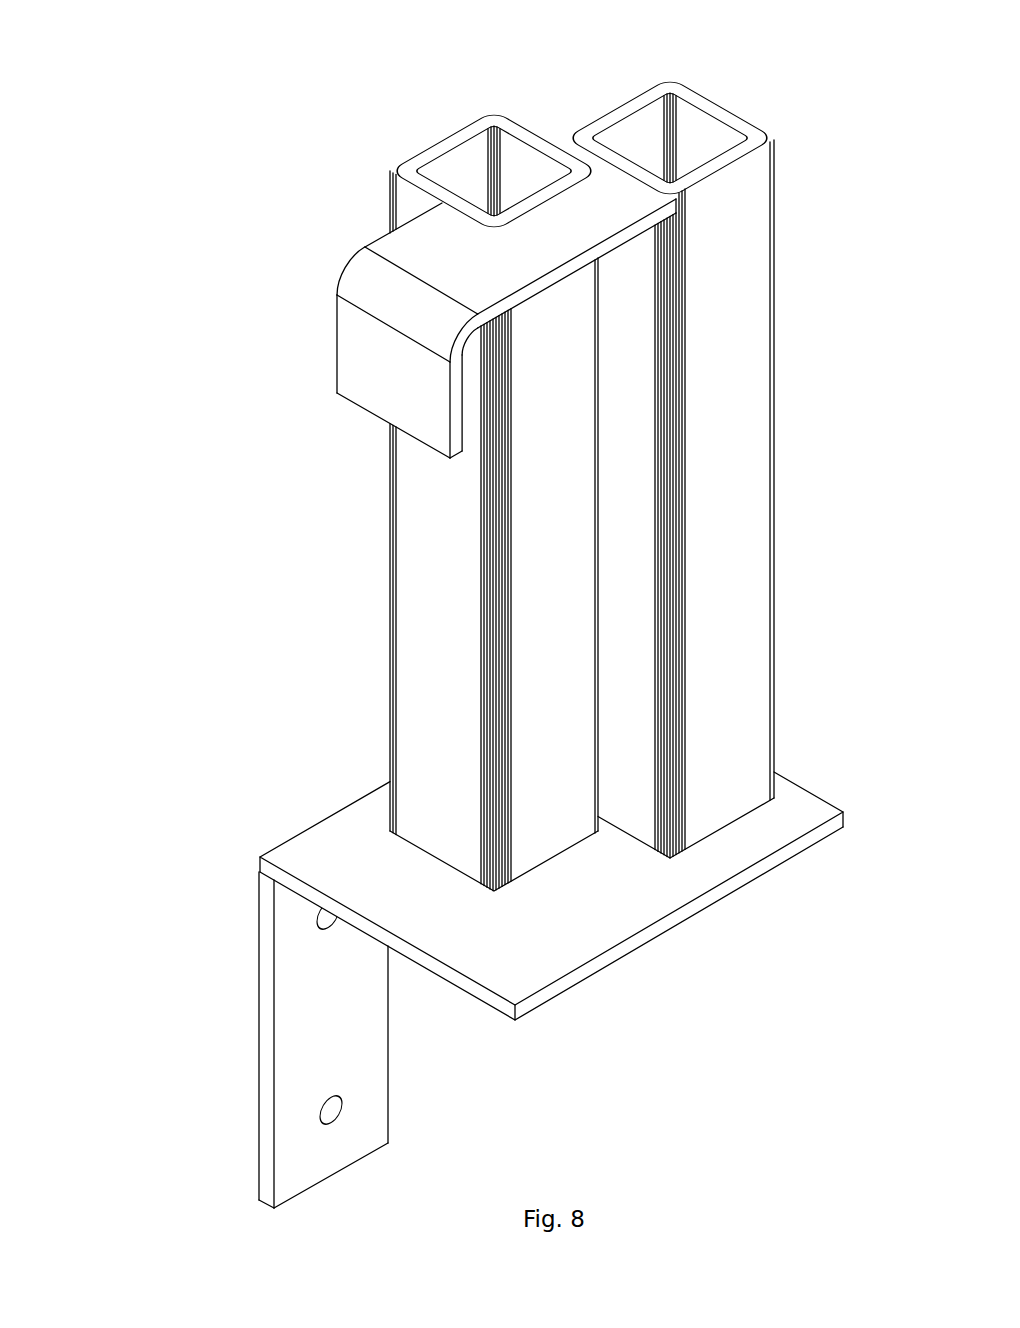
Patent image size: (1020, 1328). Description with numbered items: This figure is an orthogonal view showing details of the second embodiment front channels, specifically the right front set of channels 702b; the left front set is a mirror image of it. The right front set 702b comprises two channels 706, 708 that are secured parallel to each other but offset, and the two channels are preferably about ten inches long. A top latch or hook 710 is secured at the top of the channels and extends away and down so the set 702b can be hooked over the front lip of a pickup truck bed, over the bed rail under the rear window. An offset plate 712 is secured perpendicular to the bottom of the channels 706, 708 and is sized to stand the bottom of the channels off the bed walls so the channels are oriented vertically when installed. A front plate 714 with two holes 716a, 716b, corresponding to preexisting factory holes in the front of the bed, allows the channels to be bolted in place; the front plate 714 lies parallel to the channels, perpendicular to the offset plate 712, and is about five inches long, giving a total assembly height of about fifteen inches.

The right front set of channels 702b is at (713, 435).
The channel 706 is at (435, 598).
The channel 708 is at (735, 427).
The top latch or hook 710 is at (383, 288).
The offset plate 712 is at (620, 892).
The front plate 714 is at (333, 1005).
The hole 716a is at (338, 918).
The hole 716b is at (335, 1110).